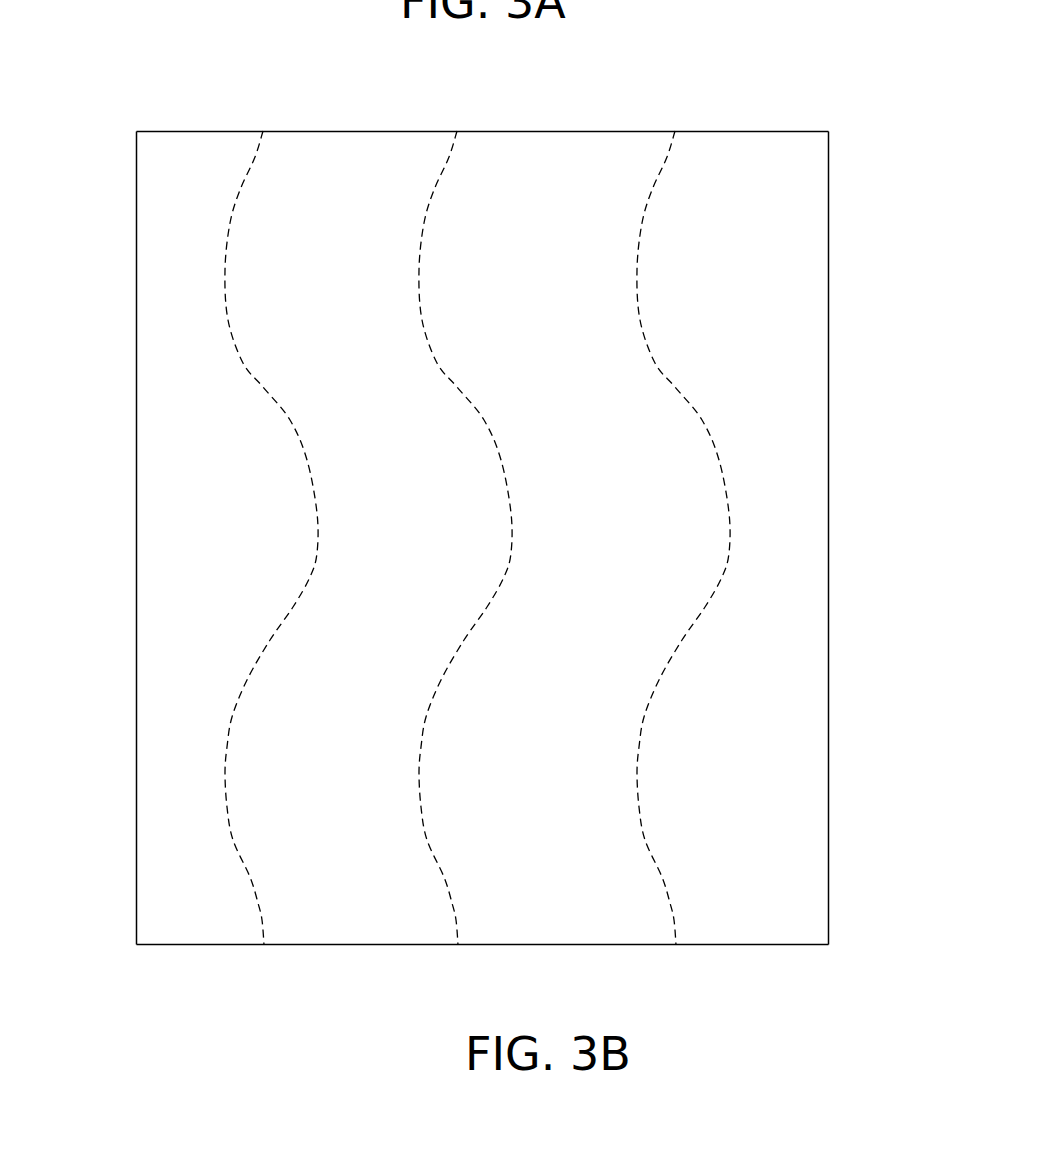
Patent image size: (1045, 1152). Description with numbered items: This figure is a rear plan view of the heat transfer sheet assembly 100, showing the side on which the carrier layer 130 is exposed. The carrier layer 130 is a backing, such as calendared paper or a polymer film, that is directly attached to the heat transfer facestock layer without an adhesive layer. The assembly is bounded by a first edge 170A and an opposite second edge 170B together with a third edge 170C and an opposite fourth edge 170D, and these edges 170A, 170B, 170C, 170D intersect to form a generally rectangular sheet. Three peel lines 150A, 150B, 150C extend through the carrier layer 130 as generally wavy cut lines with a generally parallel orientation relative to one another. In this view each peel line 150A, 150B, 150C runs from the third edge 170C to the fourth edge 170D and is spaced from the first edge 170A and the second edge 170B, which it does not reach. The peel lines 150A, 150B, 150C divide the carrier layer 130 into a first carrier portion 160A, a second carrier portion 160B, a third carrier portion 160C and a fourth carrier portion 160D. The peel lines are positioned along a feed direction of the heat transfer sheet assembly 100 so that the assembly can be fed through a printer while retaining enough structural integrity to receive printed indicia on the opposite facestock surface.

The heat transfer sheet assembly 100 is at (163, 71).
The carrier layer 130 is at (788, 205).
The peel line 150A is at (237, 197).
The peel line 150B is at (431, 197).
The peel line 150C is at (648, 200).
The first carrier portion 160A is at (177, 150).
The second carrier portion 160B is at (340, 150).
The third carrier portion 160C is at (558, 150).
The fourth carrier portion 160D is at (762, 147).
The first edge 170A is at (137, 303).
The second edge 170B is at (827, 390).
The third edge 170C is at (470, 133).
The fourth edge 170D is at (512, 948).